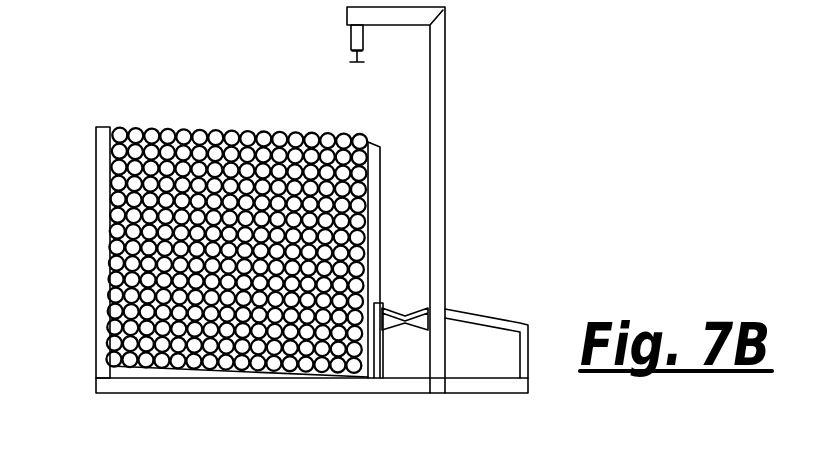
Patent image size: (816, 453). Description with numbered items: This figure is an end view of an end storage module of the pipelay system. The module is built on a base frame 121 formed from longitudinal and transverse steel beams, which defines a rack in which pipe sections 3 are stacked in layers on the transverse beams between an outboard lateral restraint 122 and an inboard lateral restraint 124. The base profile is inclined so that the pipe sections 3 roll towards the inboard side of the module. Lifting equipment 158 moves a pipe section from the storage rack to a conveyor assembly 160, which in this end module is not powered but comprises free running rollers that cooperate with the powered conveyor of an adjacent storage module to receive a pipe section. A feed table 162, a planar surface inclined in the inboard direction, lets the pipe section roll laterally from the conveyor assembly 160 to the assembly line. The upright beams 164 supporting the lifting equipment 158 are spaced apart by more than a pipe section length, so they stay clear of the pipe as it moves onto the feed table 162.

The pipe sections 3 is at (152, 127).
The base frame 121 is at (212, 385).
The outboard lateral restraint 122 is at (97, 262).
The inboard lateral restraint 124 is at (380, 252).
The lifting equipment 158 is at (363, 43).
The conveyor assembly 160 is at (407, 368).
The feed table 162 is at (504, 316).
The upright beams 164 is at (447, 147).